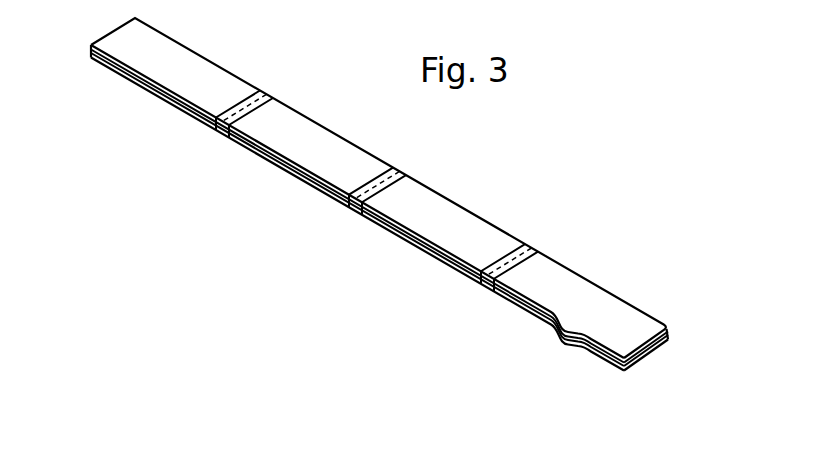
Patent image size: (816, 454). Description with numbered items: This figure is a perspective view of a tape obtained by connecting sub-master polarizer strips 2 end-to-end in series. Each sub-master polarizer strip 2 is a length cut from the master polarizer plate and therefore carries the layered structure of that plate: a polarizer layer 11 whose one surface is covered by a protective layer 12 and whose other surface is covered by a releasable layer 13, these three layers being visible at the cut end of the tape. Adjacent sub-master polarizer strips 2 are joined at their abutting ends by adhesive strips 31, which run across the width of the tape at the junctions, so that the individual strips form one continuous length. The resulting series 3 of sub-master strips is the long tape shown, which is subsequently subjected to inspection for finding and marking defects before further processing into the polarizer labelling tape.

The series of sub-master strips 3 is at (251, 169).
The sub-master polarizer strip 2 is at (218, 84).
The adhesive strip 31 is at (273, 99).
The polarizer layer 11 is at (650, 357).
The protective layer 12 is at (632, 367).
The releasable layer 13 is at (667, 347).